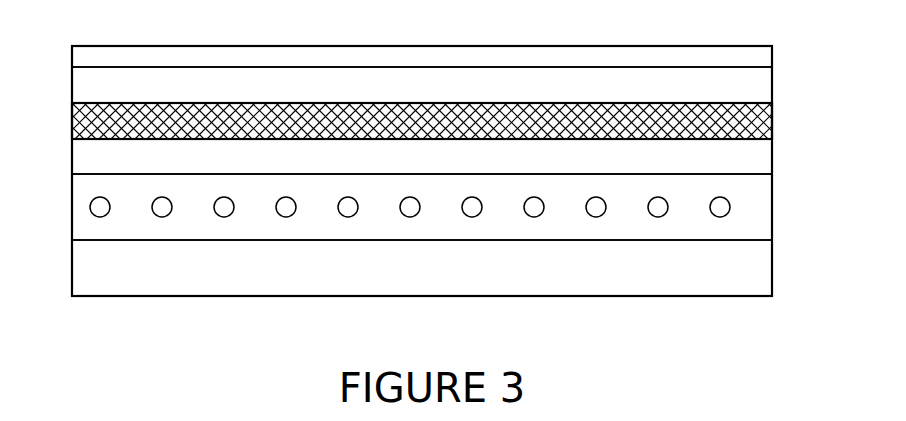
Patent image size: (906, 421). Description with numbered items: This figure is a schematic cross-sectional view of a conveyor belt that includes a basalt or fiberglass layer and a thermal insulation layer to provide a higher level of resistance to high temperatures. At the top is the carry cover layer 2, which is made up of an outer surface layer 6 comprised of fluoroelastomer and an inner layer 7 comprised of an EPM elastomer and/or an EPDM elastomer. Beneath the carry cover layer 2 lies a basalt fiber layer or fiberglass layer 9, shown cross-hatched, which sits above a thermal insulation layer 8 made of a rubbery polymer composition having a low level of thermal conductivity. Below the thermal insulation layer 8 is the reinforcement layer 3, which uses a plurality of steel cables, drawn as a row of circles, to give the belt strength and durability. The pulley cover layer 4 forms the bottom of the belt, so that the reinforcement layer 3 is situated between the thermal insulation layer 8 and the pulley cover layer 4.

The carry cover layer 2 is at (767, 85).
The reinforcement layer 3 is at (72, 208).
The pulley cover layer 4 is at (72, 270).
The outer surface layer 6 is at (72, 55).
The inner layer 7 is at (77, 87).
The thermal insulation layer 8 is at (72, 157).
The basalt fiber layer or fiberglass layer 9 is at (78, 126).